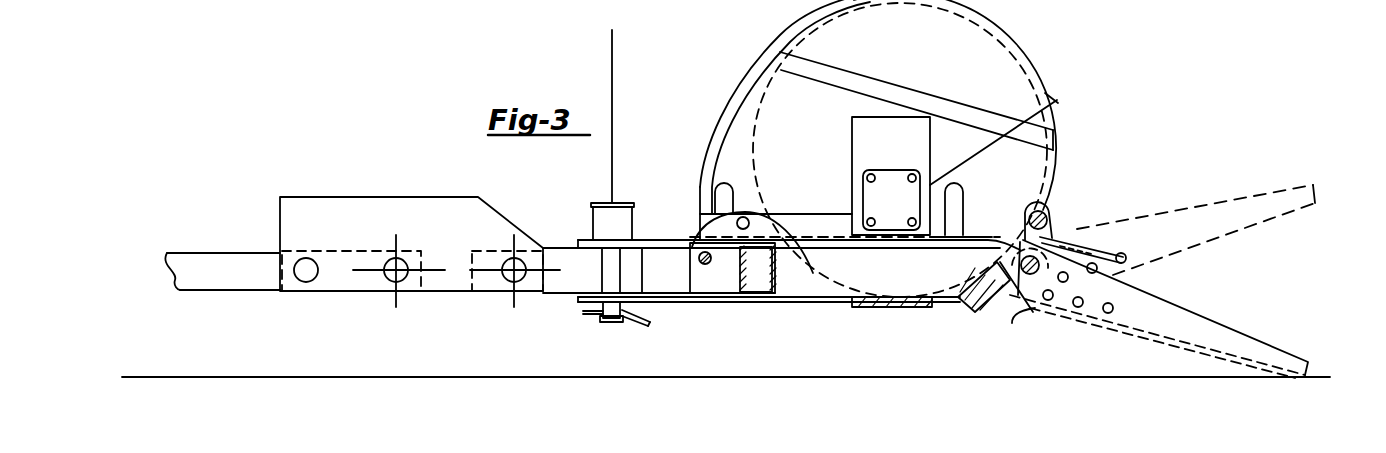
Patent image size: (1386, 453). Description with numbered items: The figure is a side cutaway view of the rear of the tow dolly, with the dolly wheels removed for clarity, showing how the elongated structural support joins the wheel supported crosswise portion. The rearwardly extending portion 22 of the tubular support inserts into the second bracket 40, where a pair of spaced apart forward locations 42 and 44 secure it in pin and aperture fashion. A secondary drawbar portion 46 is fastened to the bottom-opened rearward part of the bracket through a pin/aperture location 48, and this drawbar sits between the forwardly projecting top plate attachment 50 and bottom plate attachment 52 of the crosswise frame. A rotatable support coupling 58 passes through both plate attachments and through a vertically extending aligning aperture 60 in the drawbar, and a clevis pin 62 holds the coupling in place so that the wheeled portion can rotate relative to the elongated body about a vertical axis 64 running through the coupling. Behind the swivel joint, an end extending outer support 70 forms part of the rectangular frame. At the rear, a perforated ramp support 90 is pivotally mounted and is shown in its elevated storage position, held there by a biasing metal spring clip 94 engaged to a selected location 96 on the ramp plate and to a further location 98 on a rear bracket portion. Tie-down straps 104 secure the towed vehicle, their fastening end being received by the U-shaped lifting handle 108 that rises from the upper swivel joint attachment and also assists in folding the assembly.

The rearwardly extending portion 22 is at (205, 268).
The second bracket 40 is at (375, 200).
The forward location 42 is at (392, 275).
The forward location 44 is at (305, 283).
The secondary drawbar portion 46 is at (567, 280).
The pin/aperture location 48 is at (512, 275).
The top plate attachment 50 is at (662, 240).
The bottom plate attachment 52 is at (670, 305).
The rotatable support coupling 58 is at (608, 210).
The aligning aperture 60 is at (610, 323).
The clevis pin 62 is at (640, 323).
The vertical axis 64 is at (610, 53).
The end extending outer support 70 is at (872, 147).
The ramp support 90 is at (1143, 318).
The biasing metal spring clip 94 is at (1072, 228).
The selected location 96 is at (1127, 253).
The further location 98 is at (1050, 207).
The tie-down straps 104 is at (735, 112).
The lifting handle 108 is at (713, 147).